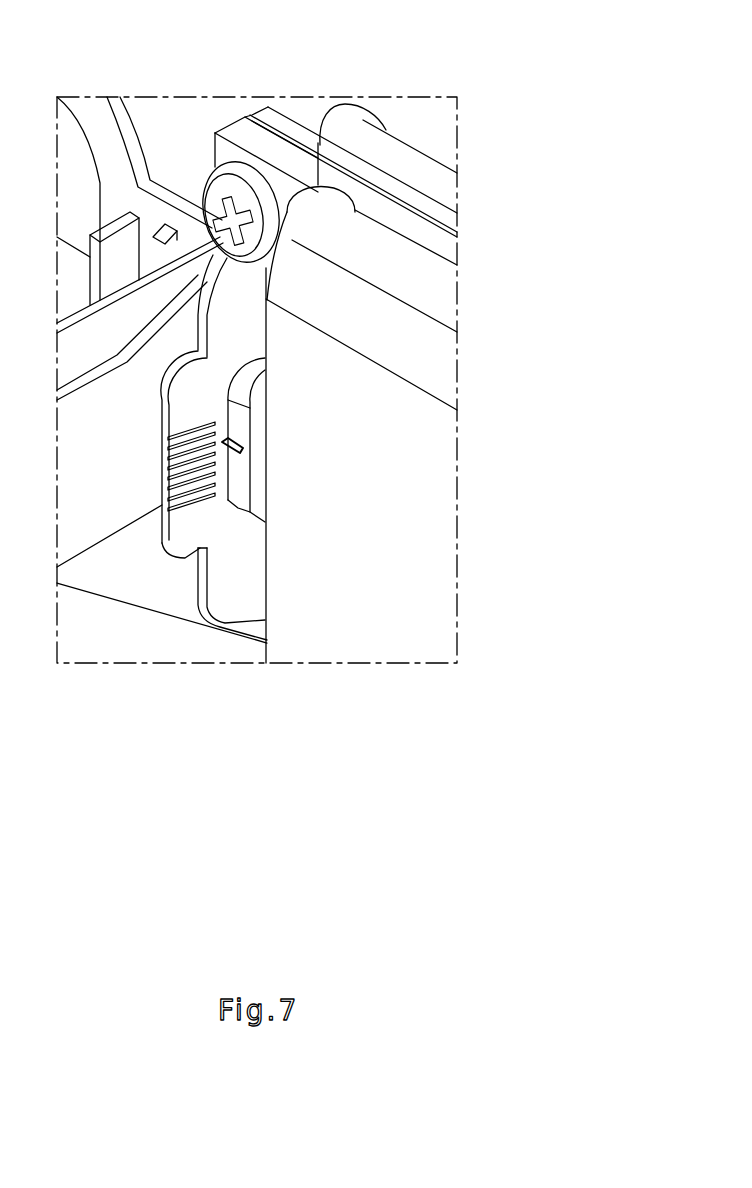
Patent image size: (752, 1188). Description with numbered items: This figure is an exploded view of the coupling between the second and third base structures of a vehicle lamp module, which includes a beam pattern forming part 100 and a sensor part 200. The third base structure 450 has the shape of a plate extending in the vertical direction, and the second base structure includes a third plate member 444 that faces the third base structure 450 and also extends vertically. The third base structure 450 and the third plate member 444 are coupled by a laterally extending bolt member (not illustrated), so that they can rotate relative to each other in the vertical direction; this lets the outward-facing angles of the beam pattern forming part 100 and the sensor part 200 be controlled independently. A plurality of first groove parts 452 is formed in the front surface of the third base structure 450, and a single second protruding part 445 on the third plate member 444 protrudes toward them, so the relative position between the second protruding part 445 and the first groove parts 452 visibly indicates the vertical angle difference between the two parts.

The beam pattern forming part 100 is at (128, 78).
The sensor part 200 is at (528, 219).
The third plate member 444 is at (260, 483).
The second protruding part 445 is at (236, 446).
The third base structure 450 is at (237, 595).
The first groove part 452 is at (172, 490).